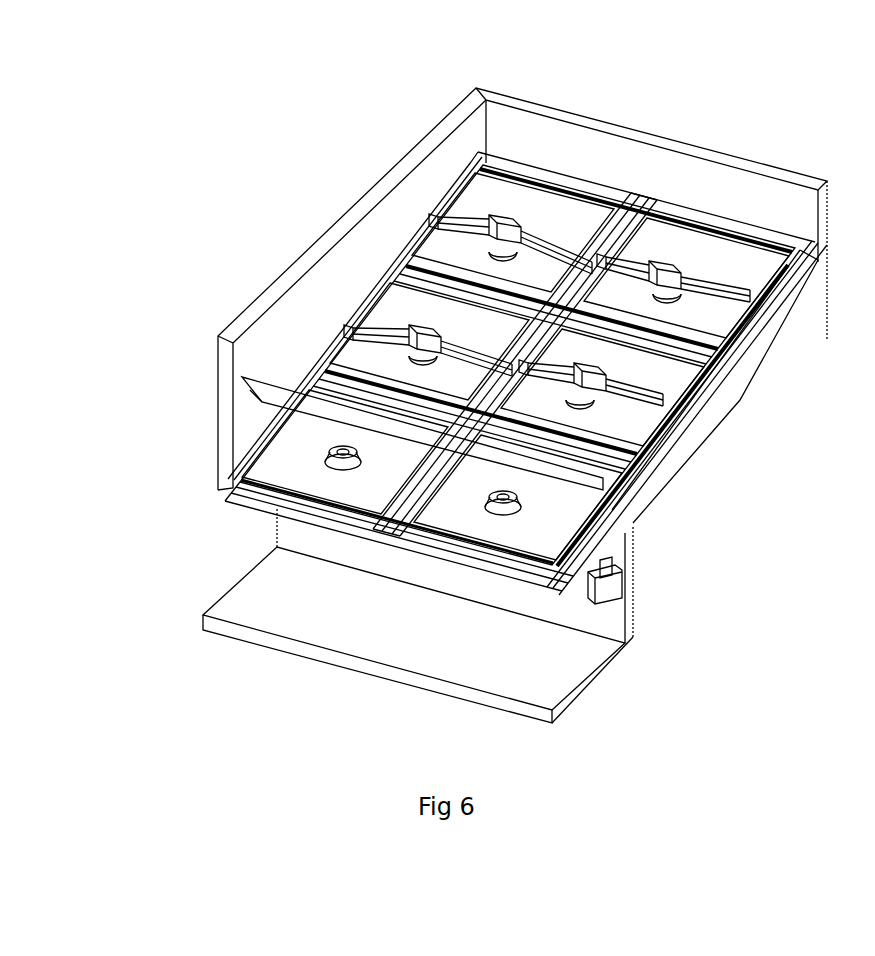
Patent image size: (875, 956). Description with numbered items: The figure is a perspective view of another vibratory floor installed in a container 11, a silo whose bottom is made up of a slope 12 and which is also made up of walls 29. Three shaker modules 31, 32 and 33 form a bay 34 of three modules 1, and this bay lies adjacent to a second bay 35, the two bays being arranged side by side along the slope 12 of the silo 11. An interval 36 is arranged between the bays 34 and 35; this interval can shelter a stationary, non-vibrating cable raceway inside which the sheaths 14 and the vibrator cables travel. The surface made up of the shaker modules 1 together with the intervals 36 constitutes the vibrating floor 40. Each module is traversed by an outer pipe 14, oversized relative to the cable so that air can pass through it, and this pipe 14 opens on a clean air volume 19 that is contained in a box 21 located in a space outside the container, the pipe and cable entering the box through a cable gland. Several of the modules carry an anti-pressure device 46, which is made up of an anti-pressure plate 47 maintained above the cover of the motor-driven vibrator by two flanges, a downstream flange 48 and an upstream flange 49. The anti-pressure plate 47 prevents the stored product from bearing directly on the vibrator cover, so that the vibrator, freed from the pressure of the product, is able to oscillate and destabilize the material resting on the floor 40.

The shaker module 1 is at (745, 273).
The container 11 is at (513, 130).
The slope 12 is at (767, 390).
The outer pipe 14 is at (635, 484).
The clean air volume 19 is at (617, 566).
The box 21 is at (627, 560).
The walls 29 is at (650, 130).
The shaker module 31 is at (288, 461).
The shaker module 32 is at (430, 303).
The shaker module 33 is at (497, 195).
The bay 34 is at (577, 160).
The bay 35 is at (717, 188).
The interval 36 is at (393, 535).
The vibrating floor 40 is at (278, 505).
The anti-pressure device 46 is at (363, 318).
The anti-pressure plate 47 is at (705, 272).
The downstream flange 48 is at (442, 230).
The upstream flange 49 is at (453, 215).